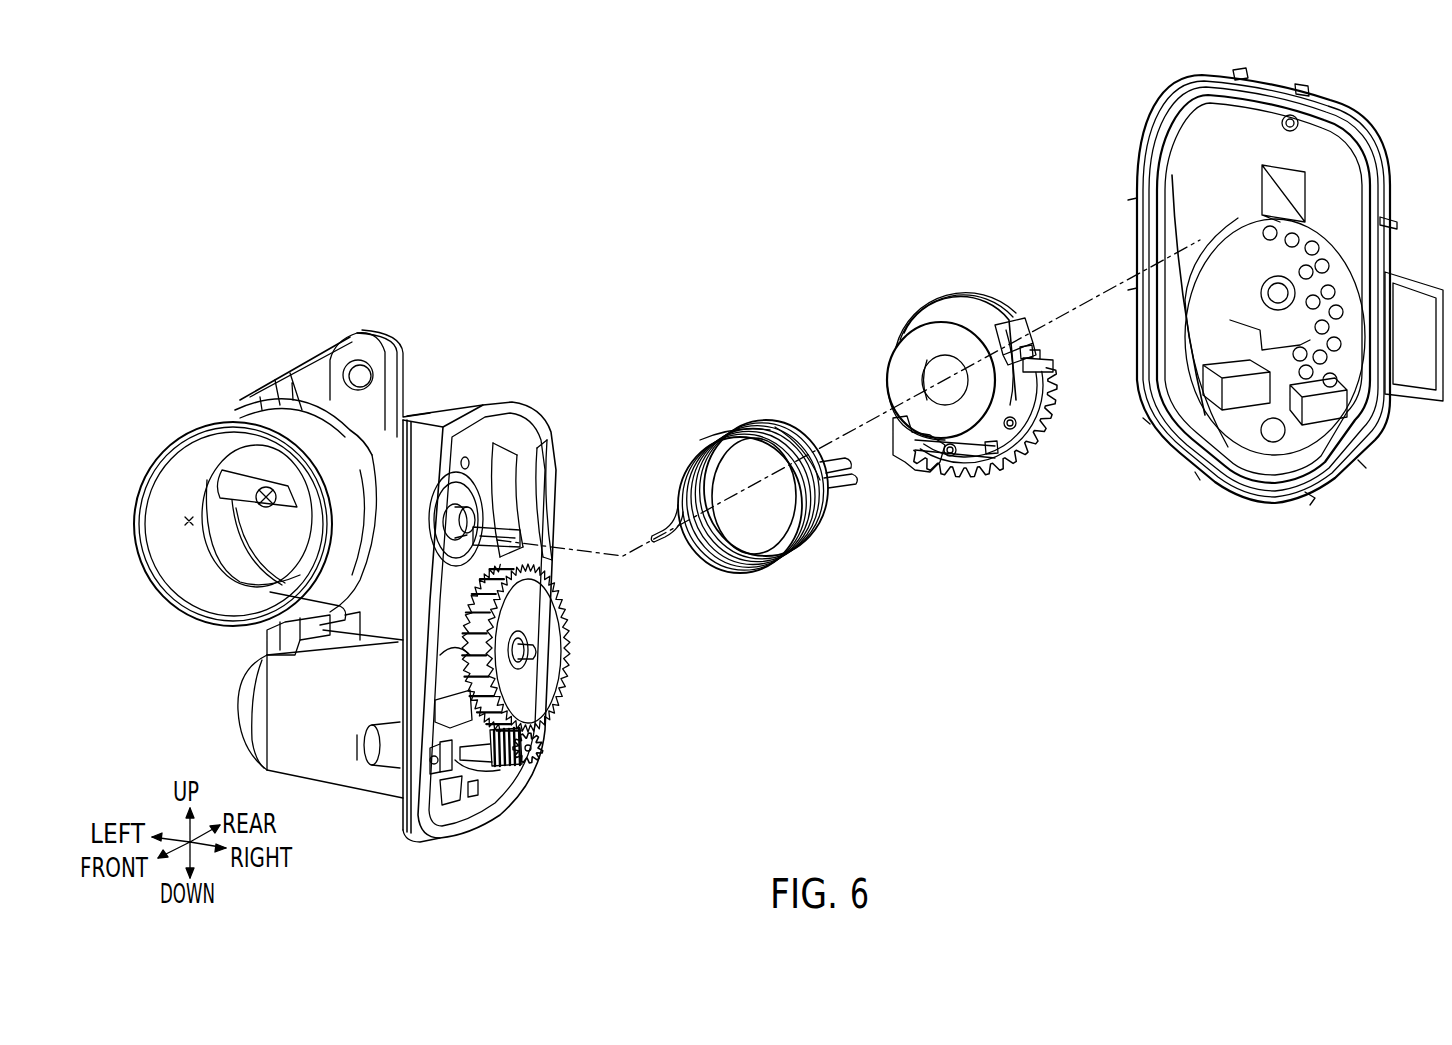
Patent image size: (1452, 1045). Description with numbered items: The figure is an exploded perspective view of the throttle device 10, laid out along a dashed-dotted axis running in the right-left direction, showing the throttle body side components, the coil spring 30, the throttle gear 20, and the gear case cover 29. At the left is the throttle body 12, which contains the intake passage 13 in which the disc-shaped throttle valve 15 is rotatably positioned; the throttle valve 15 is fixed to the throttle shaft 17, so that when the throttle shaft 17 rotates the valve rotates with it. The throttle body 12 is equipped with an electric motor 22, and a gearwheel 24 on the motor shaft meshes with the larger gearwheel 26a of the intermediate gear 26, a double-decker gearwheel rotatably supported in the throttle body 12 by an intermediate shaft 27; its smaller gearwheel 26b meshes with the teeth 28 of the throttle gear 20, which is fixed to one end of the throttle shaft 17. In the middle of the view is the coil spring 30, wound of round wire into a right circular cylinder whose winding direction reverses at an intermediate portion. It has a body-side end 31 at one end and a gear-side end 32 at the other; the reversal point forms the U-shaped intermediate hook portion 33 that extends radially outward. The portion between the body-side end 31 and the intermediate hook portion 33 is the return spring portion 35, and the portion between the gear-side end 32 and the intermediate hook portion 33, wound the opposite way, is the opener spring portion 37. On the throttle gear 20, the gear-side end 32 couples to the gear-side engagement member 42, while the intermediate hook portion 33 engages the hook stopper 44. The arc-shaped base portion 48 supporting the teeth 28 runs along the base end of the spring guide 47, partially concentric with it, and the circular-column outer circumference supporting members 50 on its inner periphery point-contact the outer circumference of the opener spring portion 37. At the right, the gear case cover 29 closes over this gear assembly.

The throttle device 10 is at (332, 268).
The throttle body 12 is at (232, 364).
The intake passage 13 is at (185, 521).
The throttle valve 15 is at (262, 525).
The throttle shaft 17 is at (476, 522).
The throttle gear 20 is at (1027, 470).
The electric motor 22 is at (447, 792).
The gearwheel 24 is at (543, 758).
The intermediate gear 26 is at (540, 682).
The larger gearwheel 26a is at (571, 638).
The smaller gearwheel 26b is at (452, 660).
The intermediate shaft 27 is at (540, 653).
The teeth 28 is at (1055, 420).
The gear case cover 29 is at (1382, 150).
The coil spring 30 is at (804, 572).
The body-side end 31 is at (657, 528).
The gear-side end 32 is at (857, 488).
The intermediate hook portion 33 is at (853, 467).
The return spring portion 35 is at (725, 432).
The opener spring portion 37 is at (790, 425).
The gear-side engagement member 42 is at (1050, 362).
The hook stopper 44 is at (1020, 335).
The spring guide 47 is at (960, 318).
The base portion 48 is at (990, 458).
The outer circumference supporting members 50 is at (1042, 442).